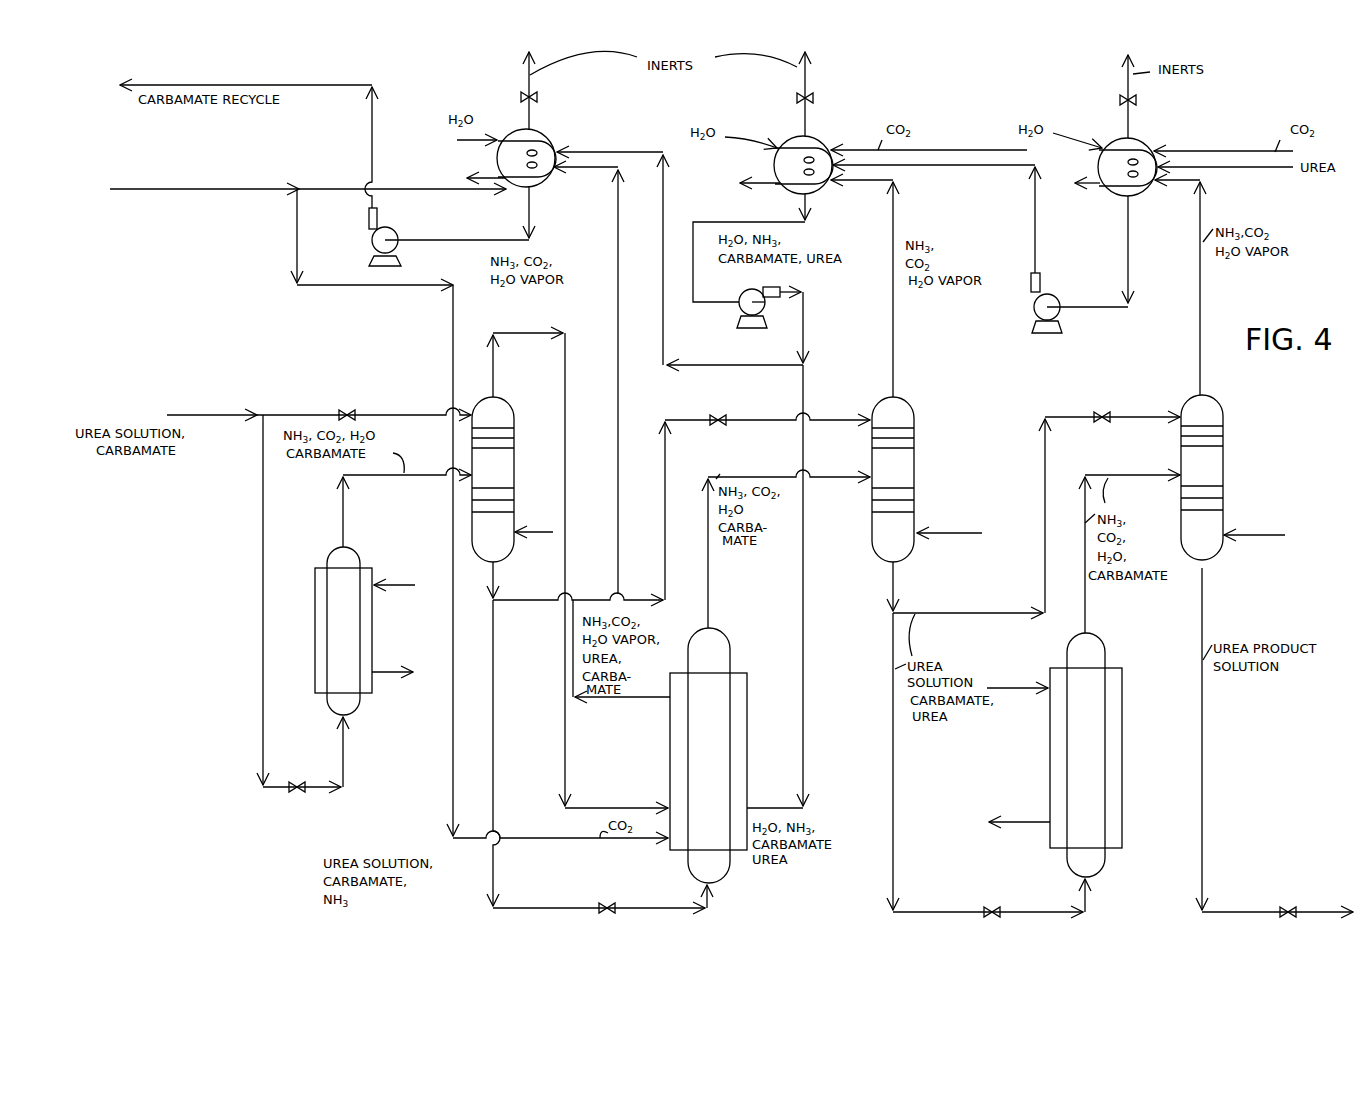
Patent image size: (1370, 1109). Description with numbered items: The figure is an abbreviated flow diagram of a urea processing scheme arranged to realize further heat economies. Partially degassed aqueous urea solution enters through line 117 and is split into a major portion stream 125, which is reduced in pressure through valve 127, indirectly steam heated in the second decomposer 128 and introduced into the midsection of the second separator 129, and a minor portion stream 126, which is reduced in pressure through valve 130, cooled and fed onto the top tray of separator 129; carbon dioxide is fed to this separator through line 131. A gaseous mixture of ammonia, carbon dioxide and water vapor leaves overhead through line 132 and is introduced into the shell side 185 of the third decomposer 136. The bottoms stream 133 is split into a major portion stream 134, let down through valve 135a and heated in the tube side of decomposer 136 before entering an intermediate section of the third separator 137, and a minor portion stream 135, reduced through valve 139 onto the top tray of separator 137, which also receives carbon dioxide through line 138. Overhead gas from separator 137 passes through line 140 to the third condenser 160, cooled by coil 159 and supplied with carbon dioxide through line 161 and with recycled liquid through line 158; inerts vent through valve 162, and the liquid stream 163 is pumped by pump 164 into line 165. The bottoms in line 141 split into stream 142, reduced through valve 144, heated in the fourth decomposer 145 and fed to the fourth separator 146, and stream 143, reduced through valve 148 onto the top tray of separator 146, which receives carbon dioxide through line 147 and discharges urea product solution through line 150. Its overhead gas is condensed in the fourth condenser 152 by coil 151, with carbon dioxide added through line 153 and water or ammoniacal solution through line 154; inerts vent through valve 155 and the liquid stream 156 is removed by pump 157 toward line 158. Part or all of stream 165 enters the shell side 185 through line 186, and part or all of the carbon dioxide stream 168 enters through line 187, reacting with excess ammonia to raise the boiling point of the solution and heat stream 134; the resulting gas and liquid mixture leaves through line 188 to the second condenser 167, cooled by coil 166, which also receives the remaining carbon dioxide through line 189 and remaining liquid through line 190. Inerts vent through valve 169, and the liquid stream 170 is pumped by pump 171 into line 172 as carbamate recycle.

The line 117 is at (200, 412).
The major portion stream 125 is at (262, 584).
The minor portion stream 126 is at (302, 412).
The valve 127 is at (296, 797).
The second decomposer 128 is at (357, 710).
The second separator 129 is at (518, 475).
The valve 130 is at (350, 410).
The line 131 is at (540, 538).
The line 132 is at (523, 333).
The stream 133 is at (487, 572).
The major portion stream 134 is at (496, 742).
The minor portion stream 135 is at (538, 601).
The valve 135a is at (612, 892).
The third decomposer 136 is at (727, 877).
The third separator 137 is at (917, 473).
The line 138 is at (960, 533).
The valve 139 is at (718, 412).
The line 140 is at (895, 348).
The line 141 is at (890, 587).
The major portion stream 142 is at (893, 735).
The minor portion stream 143 is at (973, 616).
The valve 144 is at (992, 907).
The fourth decomposer 145 is at (1097, 873).
The fourth separator 146 is at (1227, 470).
The line 147 is at (1263, 534).
The valve 148 is at (1098, 412).
The line 150 is at (1204, 740).
The coil 151 is at (1122, 146).
The fourth condenser 152 is at (1147, 138).
The line 153 is at (1247, 150).
The line 154 is at (1273, 168).
The valve 155 is at (1117, 98).
The liquid stream 156 is at (1097, 289).
The pump 157 is at (1050, 333).
The line 158 is at (1035, 204).
The coil 159 is at (800, 140).
The third condenser 160 is at (825, 142).
The line 161 is at (955, 150).
The valve 162 is at (797, 100).
The liquid stream 163 is at (693, 295).
The pump 164 is at (745, 330).
The line 165 is at (808, 345).
The coil 166 is at (512, 145).
The second condenser 167 is at (553, 143).
The line 168 is at (198, 176).
The valve 169 is at (541, 96).
The liquid stream 170 is at (536, 213).
The pump 171 is at (399, 262).
The line 172 is at (242, 85).
The shell side 185 is at (670, 762).
The line 186 is at (803, 598).
The line 187 is at (297, 242).
The line 188 is at (620, 400).
The line 189 is at (336, 176).
The line 190 is at (677, 130).